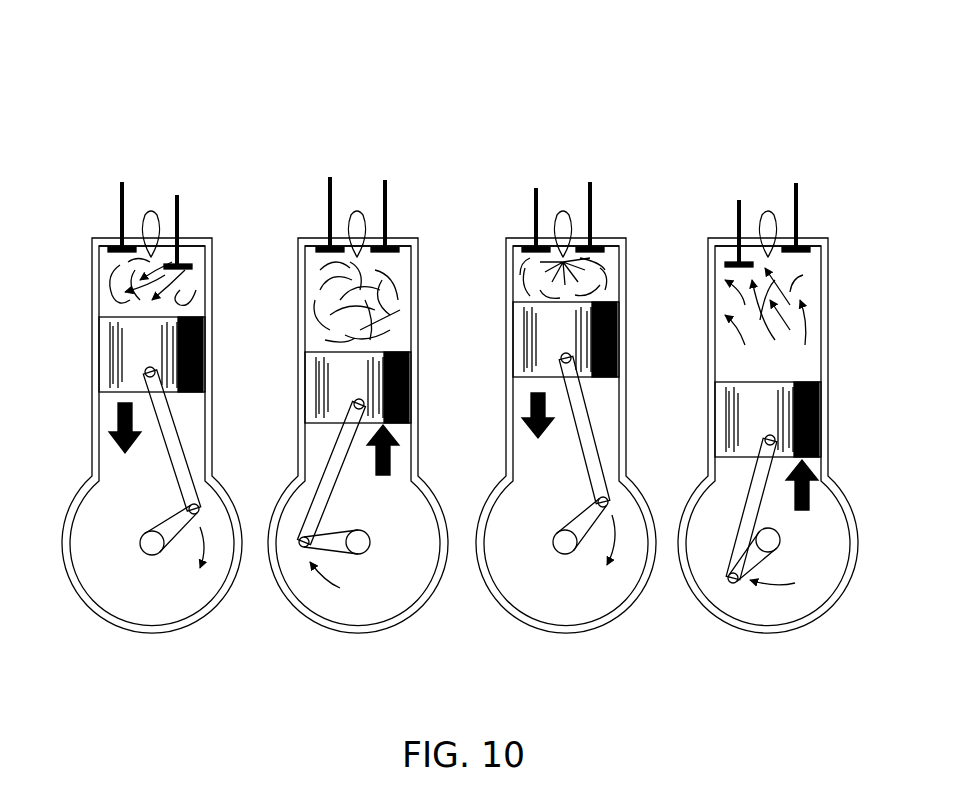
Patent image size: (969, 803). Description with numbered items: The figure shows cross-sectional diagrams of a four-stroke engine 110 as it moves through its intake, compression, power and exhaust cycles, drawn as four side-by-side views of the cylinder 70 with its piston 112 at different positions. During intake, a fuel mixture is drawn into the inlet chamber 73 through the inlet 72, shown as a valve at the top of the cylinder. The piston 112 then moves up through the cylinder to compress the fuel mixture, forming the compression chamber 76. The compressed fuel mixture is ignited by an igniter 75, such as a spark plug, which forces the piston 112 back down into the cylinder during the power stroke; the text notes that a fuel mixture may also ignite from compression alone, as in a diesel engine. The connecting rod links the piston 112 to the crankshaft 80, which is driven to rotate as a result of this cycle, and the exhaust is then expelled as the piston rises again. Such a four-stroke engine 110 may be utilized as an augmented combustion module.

The four-stroke engine 110 is at (253, 112).
The cylinder 70 is at (113, 233).
The inlet 72 is at (184, 252).
The inlet chamber 73 is at (193, 287).
The piston 112 is at (205, 350).
The igniter 75 is at (566, 210).
The compression chamber 76 is at (600, 267).
The crankshaft 80 is at (557, 545).